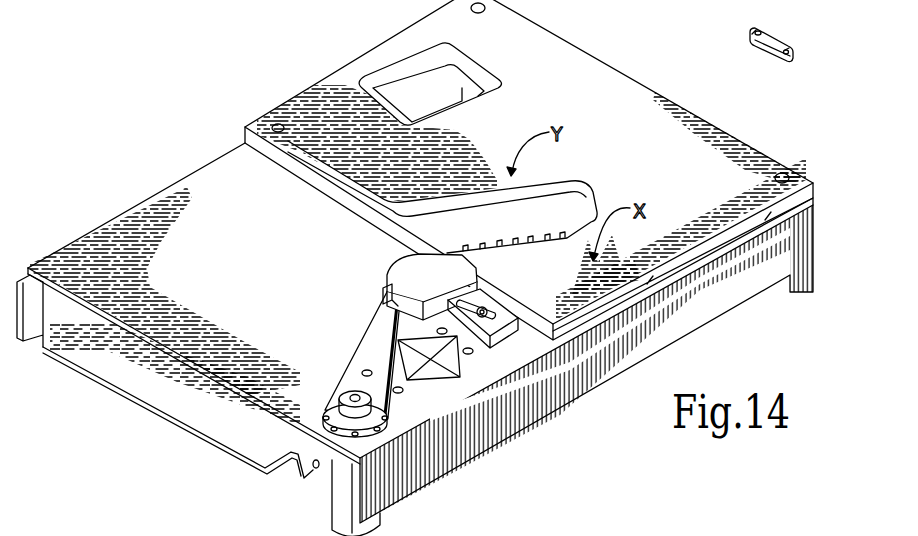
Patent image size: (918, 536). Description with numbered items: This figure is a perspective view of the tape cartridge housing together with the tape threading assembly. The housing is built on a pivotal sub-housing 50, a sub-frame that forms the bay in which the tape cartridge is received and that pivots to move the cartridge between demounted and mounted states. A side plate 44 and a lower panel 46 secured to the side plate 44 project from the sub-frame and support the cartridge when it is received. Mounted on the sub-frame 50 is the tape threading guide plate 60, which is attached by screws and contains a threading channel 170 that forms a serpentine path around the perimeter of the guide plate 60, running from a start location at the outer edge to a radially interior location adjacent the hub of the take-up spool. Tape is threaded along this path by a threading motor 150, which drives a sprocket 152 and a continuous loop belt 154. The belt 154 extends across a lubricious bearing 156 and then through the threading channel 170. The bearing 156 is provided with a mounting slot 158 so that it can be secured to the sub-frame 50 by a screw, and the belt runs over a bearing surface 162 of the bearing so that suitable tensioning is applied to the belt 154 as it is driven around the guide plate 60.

The side plate 44 is at (60, 308).
The lower panel 46 is at (228, 428).
The pivotal sub-housing 50 is at (150, 240).
The tape threading guide plate 60 is at (645, 112).
The threading motor 150 is at (342, 490).
The sprocket 152 is at (316, 402).
The continuous loop belt 154 is at (514, 250).
The lubricious bearing 156 is at (420, 270).
The mounting slot 158 is at (484, 318).
The bearing surface 162 is at (390, 284).
The threading channel 170 is at (697, 285).